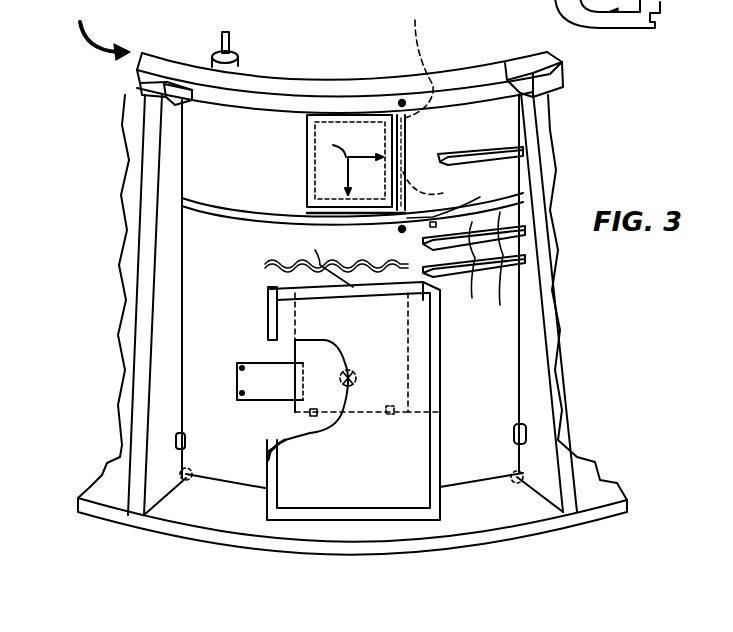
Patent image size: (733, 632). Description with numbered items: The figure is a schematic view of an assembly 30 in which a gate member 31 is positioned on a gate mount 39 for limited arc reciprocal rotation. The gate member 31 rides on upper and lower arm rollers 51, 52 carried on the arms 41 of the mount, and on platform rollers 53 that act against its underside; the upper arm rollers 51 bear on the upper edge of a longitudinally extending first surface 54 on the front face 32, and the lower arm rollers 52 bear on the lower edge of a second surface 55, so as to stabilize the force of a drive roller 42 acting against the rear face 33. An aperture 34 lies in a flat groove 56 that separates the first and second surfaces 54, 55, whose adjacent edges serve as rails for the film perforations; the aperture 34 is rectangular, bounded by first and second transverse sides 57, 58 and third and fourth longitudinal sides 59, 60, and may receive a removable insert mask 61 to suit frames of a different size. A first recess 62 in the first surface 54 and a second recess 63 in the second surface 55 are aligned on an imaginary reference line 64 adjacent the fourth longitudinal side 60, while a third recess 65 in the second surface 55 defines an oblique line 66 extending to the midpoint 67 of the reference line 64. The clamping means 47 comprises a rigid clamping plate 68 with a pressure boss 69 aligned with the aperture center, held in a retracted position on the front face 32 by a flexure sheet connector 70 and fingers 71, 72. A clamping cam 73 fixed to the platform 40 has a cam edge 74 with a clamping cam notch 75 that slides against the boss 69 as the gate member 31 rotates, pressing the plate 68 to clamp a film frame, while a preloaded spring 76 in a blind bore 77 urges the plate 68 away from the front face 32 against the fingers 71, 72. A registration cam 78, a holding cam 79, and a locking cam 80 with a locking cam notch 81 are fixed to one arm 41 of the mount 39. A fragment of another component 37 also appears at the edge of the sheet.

The assembly 30 is at (95, 30).
The gate member 31 is at (176, 60).
The front face 32 is at (352, 255).
The rear face 33 is at (200, 57).
The aperture 34 is at (353, 181).
The bracket fragment 37 is at (637, 14).
The gate mount 39 is at (352, 515).
The platform 40 is at (520, 517).
The arms 41 is at (150, 295).
The drive roller 42 is at (245, 44).
The clamping means 47 is at (290, 258).
The upper arm rollers 51 is at (141, 88).
The lower arm rollers 52 is at (185, 435).
The platform rollers 53 is at (193, 472).
The first surface 54 is at (242, 100).
The second surface 55 is at (213, 212).
The groove 56 is at (195, 137).
The first transverse side 57 is at (350, 66).
The second transverse side 58 is at (310, 213).
The third longitudinal side 59 is at (310, 180).
The fourth longitudinal side 60 is at (396, 130).
The mask 61 is at (307, 128).
The first recess 62 is at (402, 100).
The second recess 63 is at (402, 231).
The reference line 64 is at (417, 59).
The third recess 65 is at (453, 196).
The oblique line 66 is at (440, 188).
The midpoint 67 is at (423, 179).
The clamping plate 68 is at (292, 268).
The boss 69 is at (326, 257).
The connector 70 is at (237, 380).
The finger 71 is at (307, 414).
The finger 72 is at (390, 418).
The clamping cam 73 is at (356, 399).
The cam edge 74 is at (377, 285).
The clamping cam notch 75 is at (290, 300).
The spring 76 is at (381, 398).
The bore 77 is at (360, 365).
The registration cam 78 is at (488, 152).
The holding cam 79 is at (450, 285).
The locking cam 80 is at (500, 275).
The locking cam notch 81 is at (482, 264).